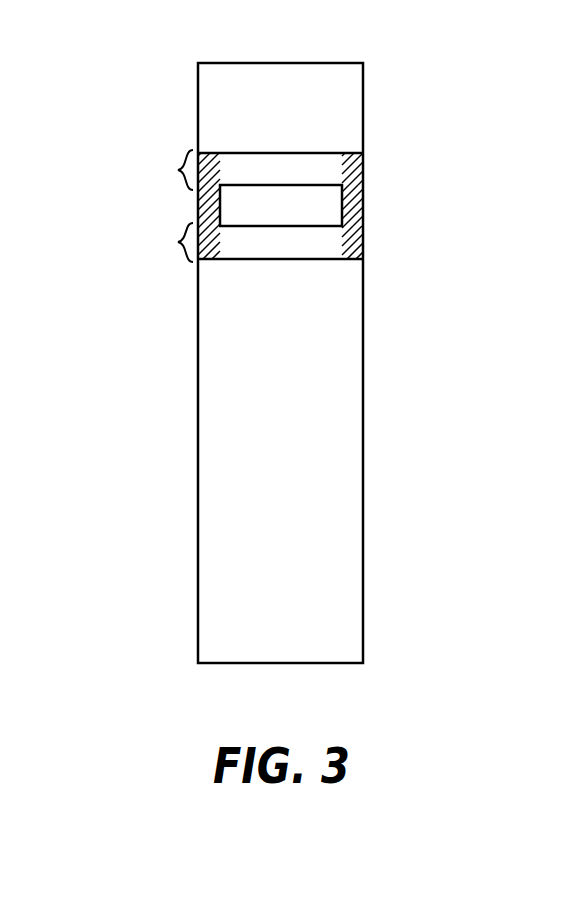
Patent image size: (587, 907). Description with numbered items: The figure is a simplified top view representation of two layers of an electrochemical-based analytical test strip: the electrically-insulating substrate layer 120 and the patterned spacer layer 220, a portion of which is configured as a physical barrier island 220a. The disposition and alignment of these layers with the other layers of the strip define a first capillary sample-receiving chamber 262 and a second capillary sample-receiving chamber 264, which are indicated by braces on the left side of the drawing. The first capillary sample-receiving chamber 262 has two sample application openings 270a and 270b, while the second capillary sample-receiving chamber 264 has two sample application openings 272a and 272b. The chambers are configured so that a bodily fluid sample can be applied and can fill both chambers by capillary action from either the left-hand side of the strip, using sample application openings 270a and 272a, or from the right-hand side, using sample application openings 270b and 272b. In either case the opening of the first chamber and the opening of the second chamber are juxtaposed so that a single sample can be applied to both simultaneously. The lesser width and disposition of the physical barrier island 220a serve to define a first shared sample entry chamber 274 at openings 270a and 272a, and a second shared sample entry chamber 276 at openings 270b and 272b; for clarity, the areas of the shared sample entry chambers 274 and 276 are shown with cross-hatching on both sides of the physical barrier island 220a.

The patterned spacer layer 220 is at (310, 73).
The physical barrier island 220a is at (323, 205).
The electrically-insulating substrate layer 120 is at (364, 180).
The first sample application opening of second capillary sample-receiving chamber 272a is at (224, 170).
The second sample application opening of second capillary sample-receiving chamber 272b is at (337, 170).
The first shared sample entry chamber 274 is at (207, 204).
The second shared sample entry chamber 276 is at (356, 198).
The first sample application opening of first capillary sample-receiving chamber 270a is at (221, 240).
The second sample application opening of first capillary sample-receiving chamber 270b is at (343, 242).
The second capillary sample-receiving chamber 264 is at (160, 170).
The first capillary sample-receiving chamber 262 is at (160, 242).